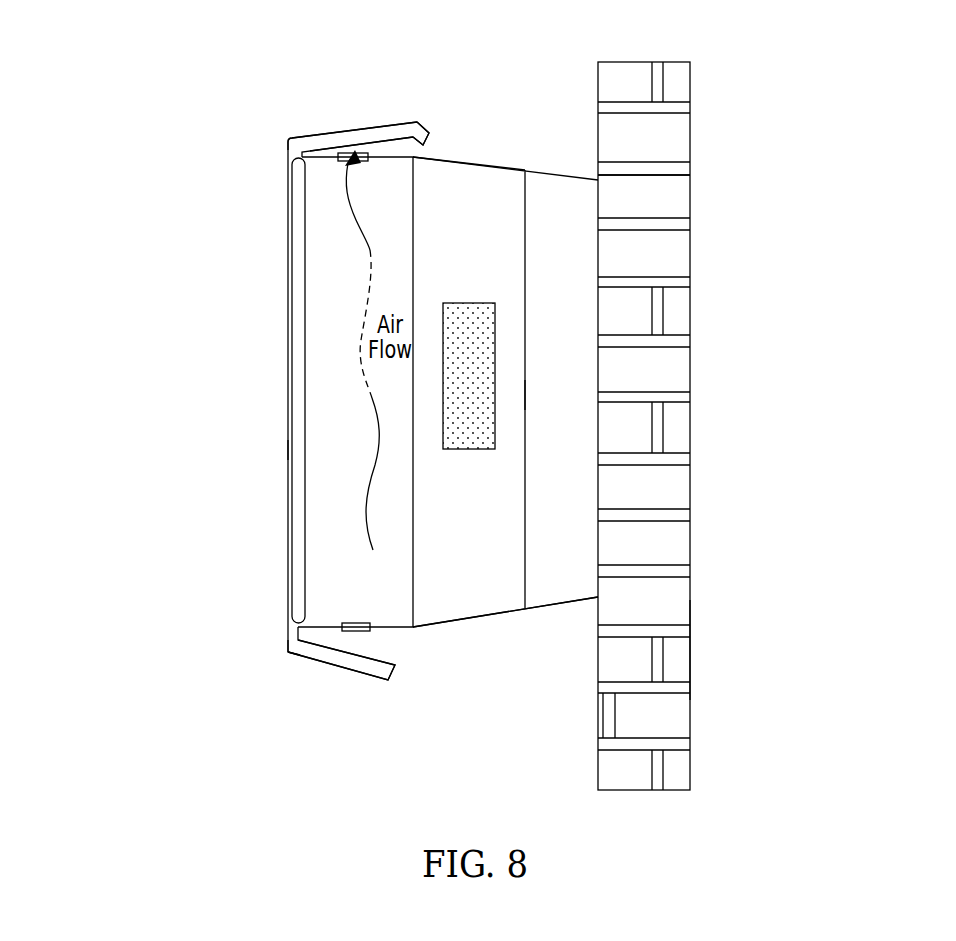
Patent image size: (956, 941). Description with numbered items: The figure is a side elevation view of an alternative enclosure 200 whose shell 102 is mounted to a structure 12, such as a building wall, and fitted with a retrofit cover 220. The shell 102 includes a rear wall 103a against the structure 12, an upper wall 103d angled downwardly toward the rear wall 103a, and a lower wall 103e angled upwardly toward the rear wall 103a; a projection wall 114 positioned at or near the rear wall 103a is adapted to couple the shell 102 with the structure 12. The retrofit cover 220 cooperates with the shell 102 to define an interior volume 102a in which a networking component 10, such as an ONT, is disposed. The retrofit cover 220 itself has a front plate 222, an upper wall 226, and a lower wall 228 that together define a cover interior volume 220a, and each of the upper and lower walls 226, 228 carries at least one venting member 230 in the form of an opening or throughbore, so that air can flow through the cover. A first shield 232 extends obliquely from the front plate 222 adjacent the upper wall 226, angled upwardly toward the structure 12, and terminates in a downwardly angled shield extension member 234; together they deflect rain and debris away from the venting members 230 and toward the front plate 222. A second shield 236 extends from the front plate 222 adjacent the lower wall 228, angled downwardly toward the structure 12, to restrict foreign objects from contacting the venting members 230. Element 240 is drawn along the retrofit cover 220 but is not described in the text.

The alternative enclosure 200 is at (289, 395).
The retrofit cover 220 is at (290, 155).
The cover interior volume 220a is at (330, 358).
The front plate 222 is at (288, 453).
The upper wall 226 is at (383, 123).
The lower wall 228 is at (321, 627).
The venting member 230 is at (357, 623).
The first shield 232 is at (300, 135).
The shield extension member 234 is at (430, 135).
The second shield 236 is at (333, 667).
The rod / hinge pin 240 is at (300, 277).
The networking component 10 is at (462, 438).
The structure 12 is at (687, 426).
The shell 102 is at (490, 332).
The interior volume 102a is at (708, 660).
The rear wall 103a is at (525, 393).
The upper wall 103d is at (510, 167).
The lower wall 103e is at (477, 616).
The projection wall 114 is at (580, 192).